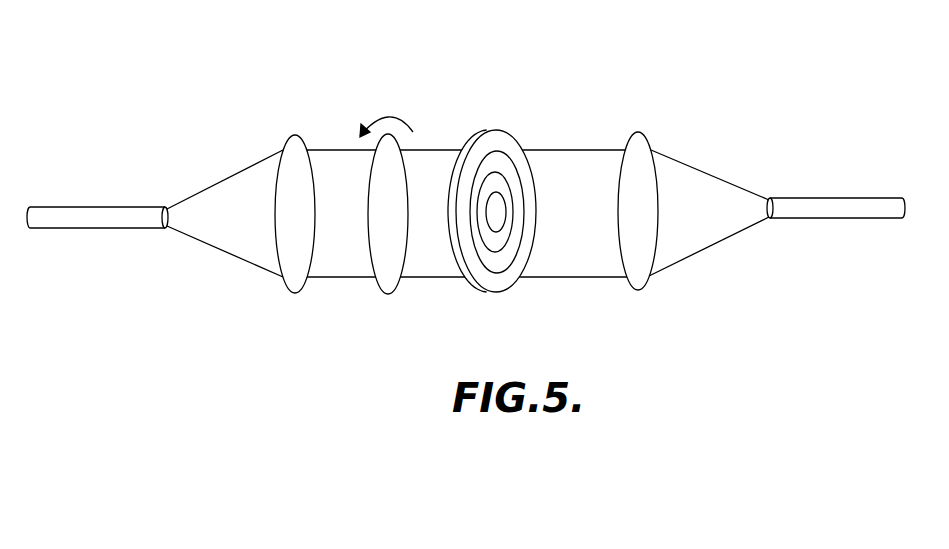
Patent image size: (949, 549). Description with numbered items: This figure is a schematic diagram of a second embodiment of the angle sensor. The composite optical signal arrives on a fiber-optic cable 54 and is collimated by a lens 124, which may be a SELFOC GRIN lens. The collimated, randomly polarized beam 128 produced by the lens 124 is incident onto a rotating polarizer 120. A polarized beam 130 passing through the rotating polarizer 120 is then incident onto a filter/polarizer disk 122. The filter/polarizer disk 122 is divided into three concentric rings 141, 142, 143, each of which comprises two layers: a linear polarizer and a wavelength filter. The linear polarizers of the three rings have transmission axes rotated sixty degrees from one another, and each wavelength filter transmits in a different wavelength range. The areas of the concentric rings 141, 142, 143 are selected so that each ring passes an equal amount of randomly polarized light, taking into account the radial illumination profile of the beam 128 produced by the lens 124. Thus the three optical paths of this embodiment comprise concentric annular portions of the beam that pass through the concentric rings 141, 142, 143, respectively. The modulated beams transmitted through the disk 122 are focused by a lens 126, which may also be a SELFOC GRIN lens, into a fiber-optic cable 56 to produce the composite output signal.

The fiber-optic cable 54 is at (88, 210).
The fiber-optic cable 56 is at (840, 198).
The rotating polarizer 120 is at (388, 294).
The filter/polarizer disk 122 is at (521, 181).
The lens 124 is at (295, 293).
The lens 126 is at (638, 290).
The collimated randomly polarized beam 128 is at (327, 150).
The polarized beam 130 is at (441, 278).
The concentric ring 141 is at (517, 152).
The concentric ring 142 is at (513, 178).
The concentric ring 143 is at (510, 210).